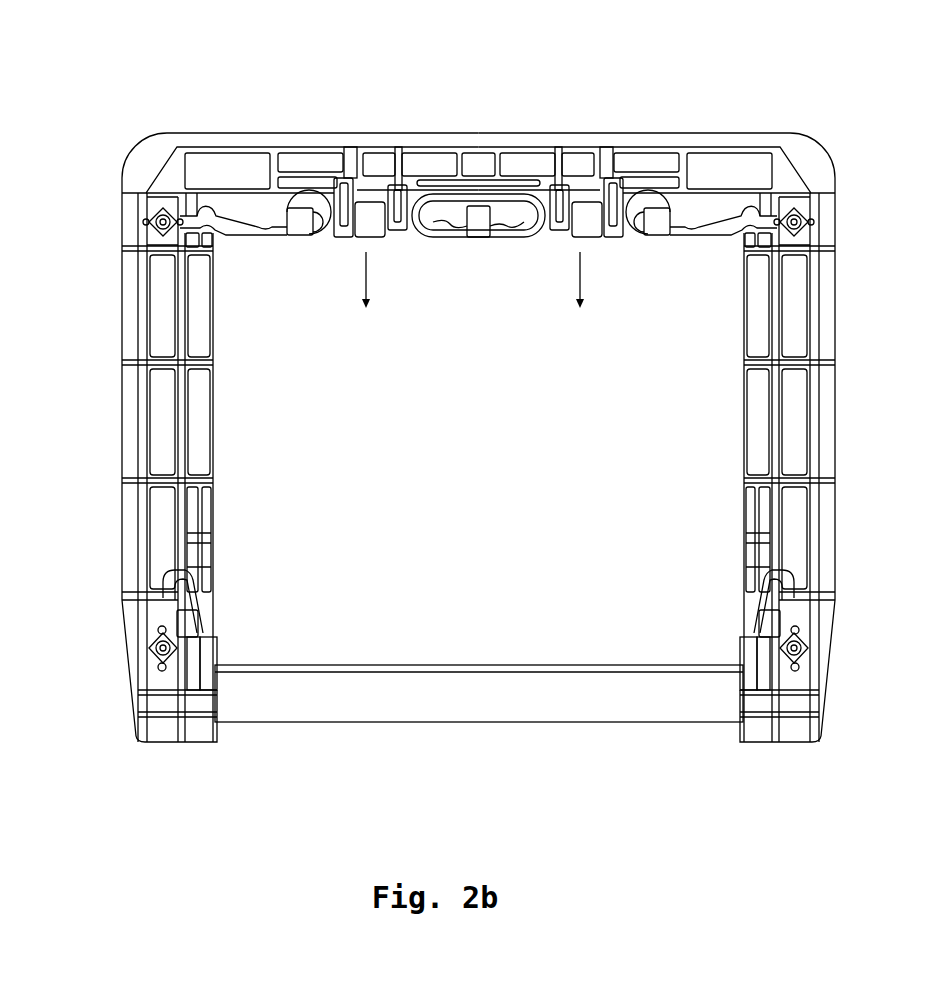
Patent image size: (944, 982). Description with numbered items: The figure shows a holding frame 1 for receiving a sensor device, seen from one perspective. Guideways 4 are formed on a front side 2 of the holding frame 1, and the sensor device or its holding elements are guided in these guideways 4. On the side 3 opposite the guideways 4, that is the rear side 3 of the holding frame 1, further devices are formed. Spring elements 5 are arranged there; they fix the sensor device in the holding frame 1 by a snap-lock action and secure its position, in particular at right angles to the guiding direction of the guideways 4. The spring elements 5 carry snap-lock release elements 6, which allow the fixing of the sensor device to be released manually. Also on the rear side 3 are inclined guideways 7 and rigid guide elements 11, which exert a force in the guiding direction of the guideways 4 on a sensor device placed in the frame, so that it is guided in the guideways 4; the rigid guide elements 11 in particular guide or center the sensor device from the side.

The holding frame 1 is at (437, 418).
The front side 2 is at (491, 748).
The rear side 3 is at (481, 97).
The guideways 4 is at (212, 625).
The spring elements 5 is at (254, 228).
The snap-lock release elements 6 is at (302, 225).
The inclined guideways 7 is at (580, 220).
The rigid guide elements 11 is at (345, 152).